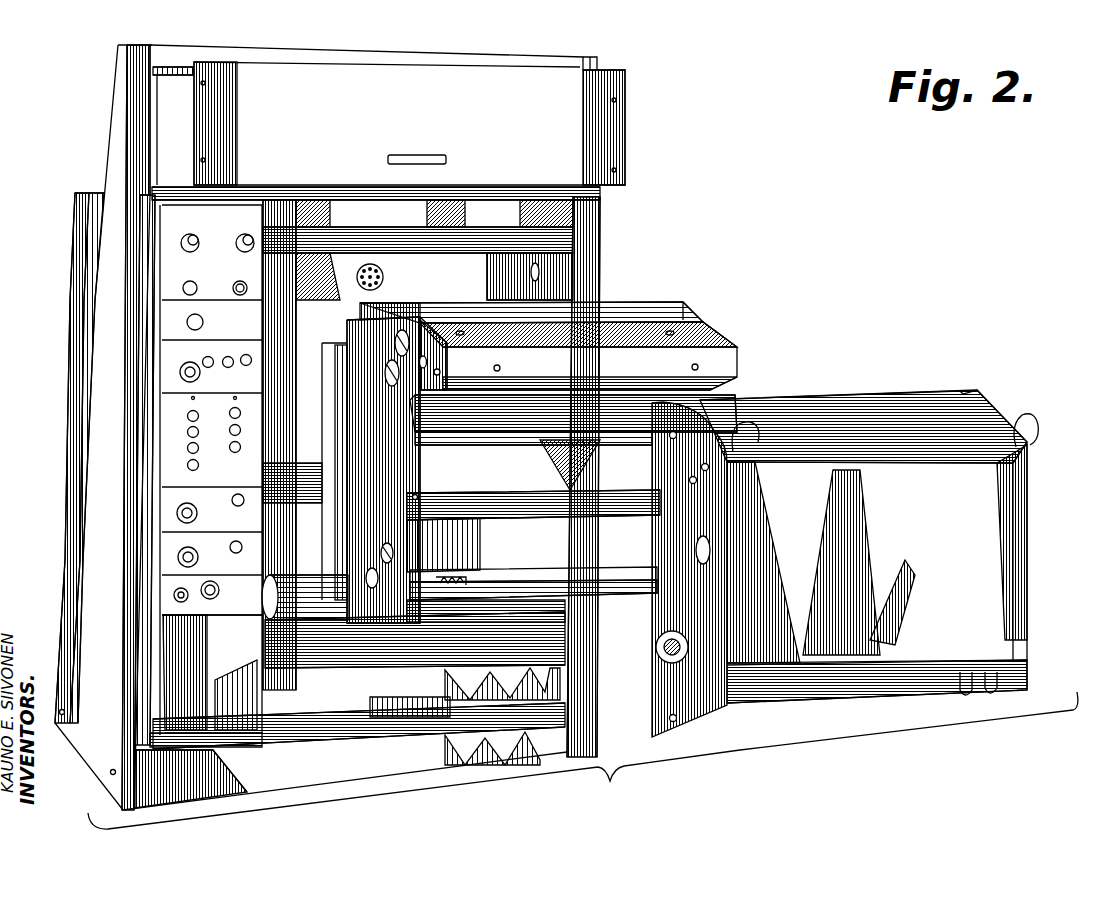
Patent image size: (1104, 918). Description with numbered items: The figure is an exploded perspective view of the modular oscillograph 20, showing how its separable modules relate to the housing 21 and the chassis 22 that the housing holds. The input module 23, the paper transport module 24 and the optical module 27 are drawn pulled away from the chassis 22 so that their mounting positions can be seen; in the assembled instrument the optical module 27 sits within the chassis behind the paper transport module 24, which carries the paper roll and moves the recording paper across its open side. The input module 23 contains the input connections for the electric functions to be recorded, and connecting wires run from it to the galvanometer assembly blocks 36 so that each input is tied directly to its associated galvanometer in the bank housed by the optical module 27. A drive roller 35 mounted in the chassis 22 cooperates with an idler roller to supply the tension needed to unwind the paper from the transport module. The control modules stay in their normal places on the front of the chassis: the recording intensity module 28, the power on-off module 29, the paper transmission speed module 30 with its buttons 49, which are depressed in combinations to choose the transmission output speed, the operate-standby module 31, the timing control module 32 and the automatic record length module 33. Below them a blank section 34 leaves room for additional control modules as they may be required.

The modular oscillograph 20 is at (619, 216).
The housing 21 is at (0, 183).
The chassis 22 is at (75, 242).
The input module 23 is at (598, 124).
The paper transport module 24 is at (997, 488).
The optical module 27 is at (695, 312).
The recording intensity module 28 is at (180, 268).
The power on-off module 29 is at (175, 360).
The paper transmission speed module 30 is at (170, 440).
The operate-standby module 31 is at (173, 500).
The timing control module 32 is at (175, 540).
The automatic record length module 33 is at (172, 582).
The blank section 34 is at (172, 713).
The drive roller 35 is at (305, 578).
The galvanometer assembly blocks 36 is at (490, 572).
The buttons 49 is at (187, 415).